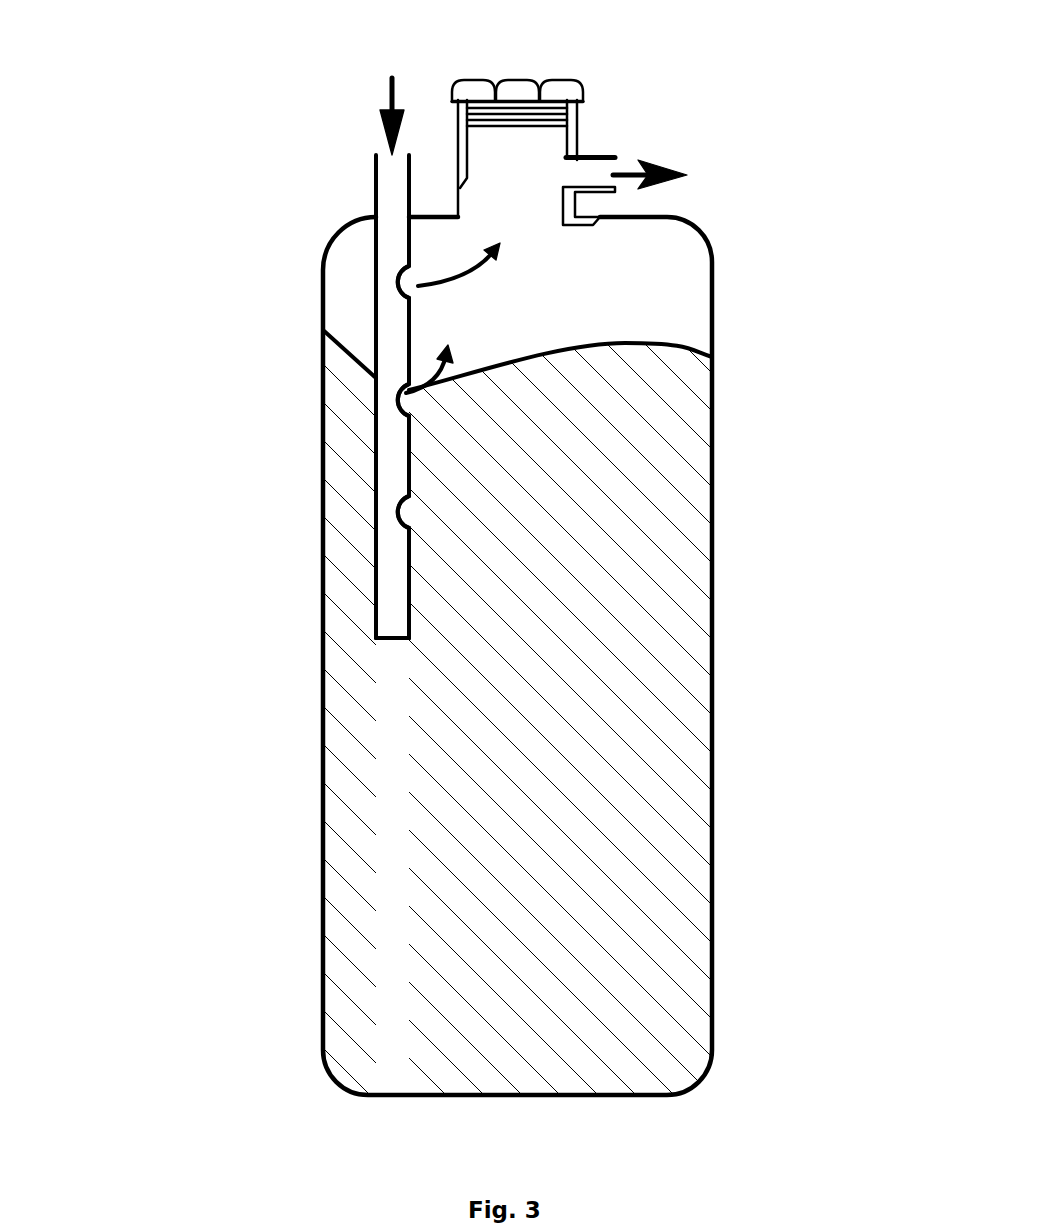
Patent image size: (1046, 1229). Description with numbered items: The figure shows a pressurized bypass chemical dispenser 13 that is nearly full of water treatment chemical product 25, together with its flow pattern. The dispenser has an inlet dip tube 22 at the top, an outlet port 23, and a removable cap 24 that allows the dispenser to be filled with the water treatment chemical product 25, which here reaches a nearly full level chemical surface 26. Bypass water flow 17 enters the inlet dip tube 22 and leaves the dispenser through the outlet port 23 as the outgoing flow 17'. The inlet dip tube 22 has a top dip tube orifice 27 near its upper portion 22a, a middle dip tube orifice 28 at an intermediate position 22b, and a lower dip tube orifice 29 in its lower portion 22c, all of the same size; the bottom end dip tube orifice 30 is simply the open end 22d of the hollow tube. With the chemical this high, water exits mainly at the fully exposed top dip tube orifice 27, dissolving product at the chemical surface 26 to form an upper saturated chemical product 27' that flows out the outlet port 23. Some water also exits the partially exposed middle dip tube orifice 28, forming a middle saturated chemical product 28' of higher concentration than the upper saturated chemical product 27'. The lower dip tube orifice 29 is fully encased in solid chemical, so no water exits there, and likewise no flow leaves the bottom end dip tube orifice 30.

The bypass chemical dispenser 13 is at (320, 299).
The bypass water flow 17 is at (312, 112).
The outlet gas flow 17' is at (738, 177).
The inlet dip tube 22 is at (372, 188).
The upper portion of the inlet dip tube 22a is at (397, 283).
The intermediate position of the inlet dip tube 22b is at (397, 392).
The lower portion of the inlet dip tube 22c is at (395, 505).
The open end of the hollow inlet dip tube 22d is at (377, 638).
The outlet port 23 is at (605, 152).
The removable cap 24 is at (590, 75).
The water treatment chemical product 25 is at (638, 586).
The nearly full level chemical surface 26 is at (642, 335).
The top dip tube orifice 27 is at (310, 355).
The upper saturated chemical product 27' is at (476, 239).
The middle dip tube orifice 28 is at (277, 493).
The middle saturated chemical product 28' is at (463, 352).
The lower dip tube orifice 29 is at (395, 522).
The bottom end dip tube orifice 30 is at (395, 638).